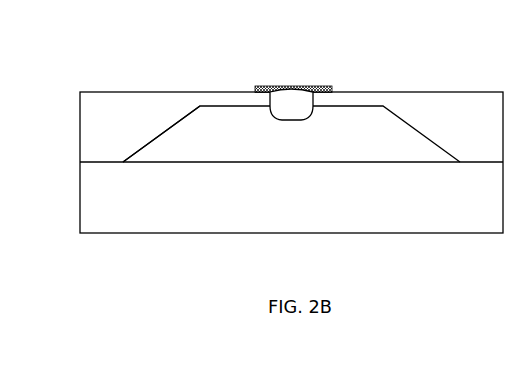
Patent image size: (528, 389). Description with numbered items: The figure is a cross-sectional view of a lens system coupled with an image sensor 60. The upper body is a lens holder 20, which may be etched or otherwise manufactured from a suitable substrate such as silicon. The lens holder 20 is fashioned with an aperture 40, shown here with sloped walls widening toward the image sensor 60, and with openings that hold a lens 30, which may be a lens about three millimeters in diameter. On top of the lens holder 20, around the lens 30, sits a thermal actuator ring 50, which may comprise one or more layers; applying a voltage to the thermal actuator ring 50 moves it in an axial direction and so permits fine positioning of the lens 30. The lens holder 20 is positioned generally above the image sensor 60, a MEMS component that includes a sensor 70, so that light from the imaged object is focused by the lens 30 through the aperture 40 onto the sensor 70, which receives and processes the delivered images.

The lens holder 20 is at (480, 132).
The lens 30 is at (296, 121).
The aperture 40 is at (382, 152).
The thermal actuator ring 50 is at (325, 87).
The image sensor 60 is at (424, 212).
The sensor 70 is at (182, 162).